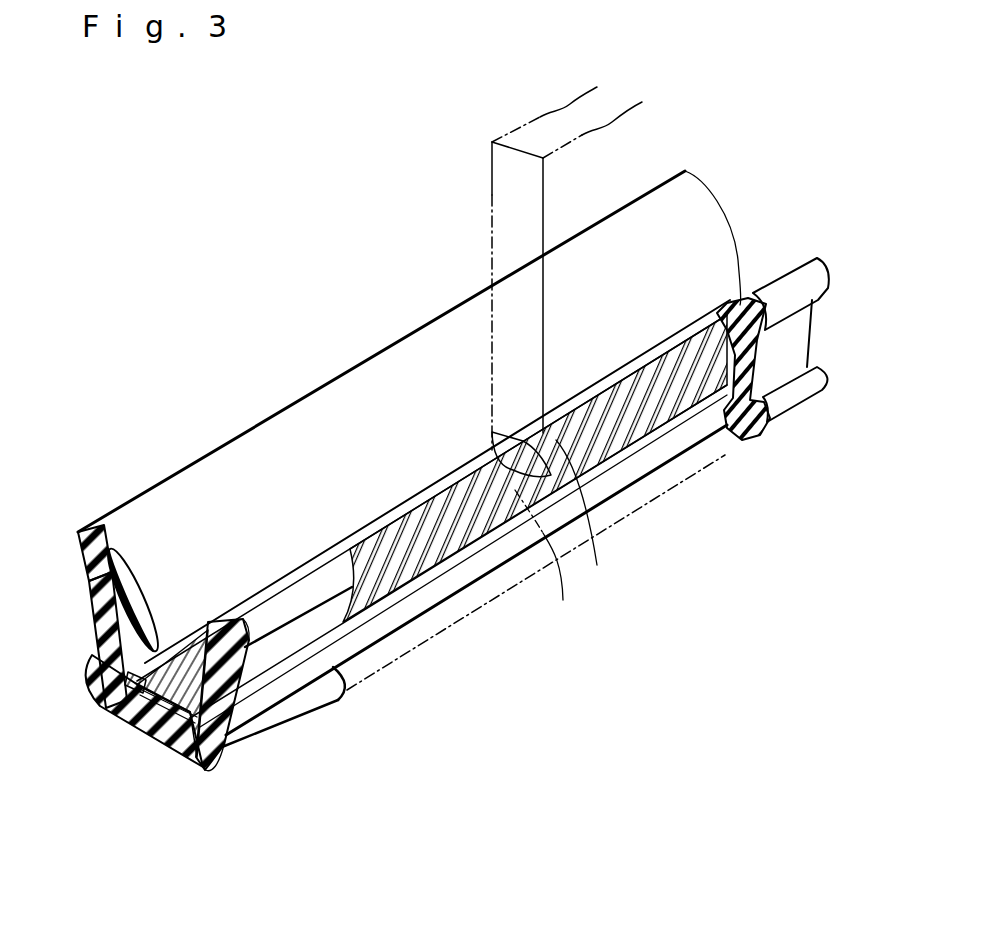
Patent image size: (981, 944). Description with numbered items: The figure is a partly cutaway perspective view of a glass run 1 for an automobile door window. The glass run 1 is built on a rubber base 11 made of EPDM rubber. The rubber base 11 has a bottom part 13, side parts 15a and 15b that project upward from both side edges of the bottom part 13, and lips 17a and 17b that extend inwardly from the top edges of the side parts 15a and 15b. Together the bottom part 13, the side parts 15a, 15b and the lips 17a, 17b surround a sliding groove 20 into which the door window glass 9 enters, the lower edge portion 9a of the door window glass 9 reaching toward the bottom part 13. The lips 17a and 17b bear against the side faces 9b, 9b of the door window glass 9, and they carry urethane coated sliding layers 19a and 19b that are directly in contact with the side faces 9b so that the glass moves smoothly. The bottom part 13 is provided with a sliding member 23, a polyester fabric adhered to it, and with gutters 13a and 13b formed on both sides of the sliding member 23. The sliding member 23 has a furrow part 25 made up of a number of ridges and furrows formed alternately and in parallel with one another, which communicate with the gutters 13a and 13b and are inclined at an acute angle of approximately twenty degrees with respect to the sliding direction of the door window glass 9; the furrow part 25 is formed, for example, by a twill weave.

The glass run 1 is at (293, 392).
The door window glass 9 is at (500, 185).
The plate lower edge 9a is at (536, 572).
The side face of the door window glass 9b is at (458, 521).
The rubber base 11 is at (253, 457).
The bottom part 13 is at (182, 727).
The gutter 13a is at (180, 753).
The gutter 13b is at (107, 712).
The side part 15a is at (263, 707).
The side part 15b is at (105, 607).
The lip 17a is at (223, 740).
The lip 17b is at (110, 557).
The sliding layer 19a is at (262, 700).
The sliding layer 19b is at (180, 503).
The sliding groove 20 is at (213, 557).
The sliding member 23 is at (138, 722).
The furrow part 25 is at (167, 743).